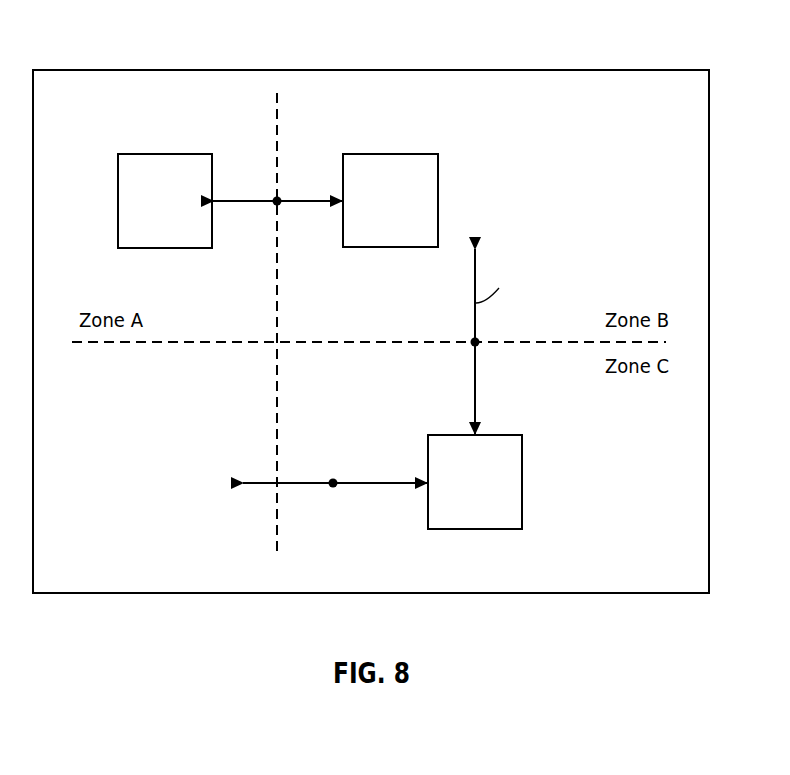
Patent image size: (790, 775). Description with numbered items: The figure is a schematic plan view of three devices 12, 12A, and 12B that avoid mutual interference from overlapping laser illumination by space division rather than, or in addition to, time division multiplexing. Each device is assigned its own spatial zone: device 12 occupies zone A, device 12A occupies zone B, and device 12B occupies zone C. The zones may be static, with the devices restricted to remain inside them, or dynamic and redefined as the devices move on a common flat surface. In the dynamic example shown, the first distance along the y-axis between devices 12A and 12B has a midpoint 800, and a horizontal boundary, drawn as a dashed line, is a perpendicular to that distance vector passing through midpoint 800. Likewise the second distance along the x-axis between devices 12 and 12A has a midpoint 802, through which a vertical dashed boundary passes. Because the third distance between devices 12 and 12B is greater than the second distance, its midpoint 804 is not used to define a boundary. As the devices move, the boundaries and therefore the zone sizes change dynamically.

The device 12 is at (118, 180).
The device 12A is at (438, 179).
The device 12B is at (522, 477).
The midpoint 800 is at (474, 373).
The midpoint 802 is at (278, 199).
The midpoint 804 is at (335, 486).